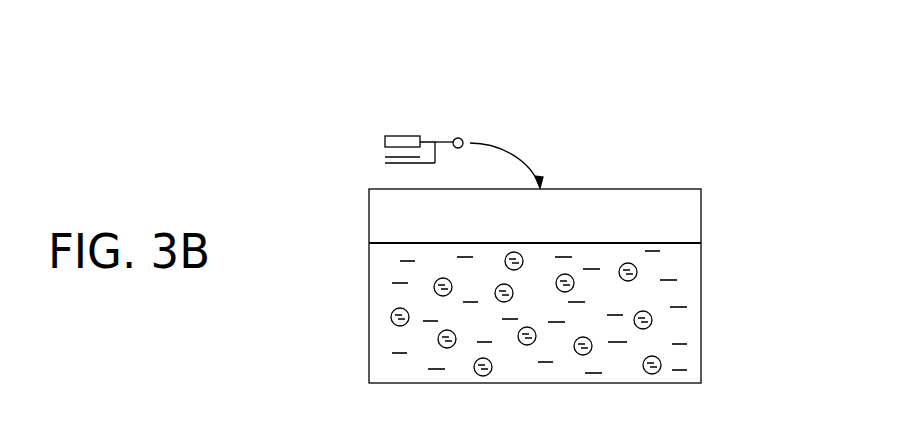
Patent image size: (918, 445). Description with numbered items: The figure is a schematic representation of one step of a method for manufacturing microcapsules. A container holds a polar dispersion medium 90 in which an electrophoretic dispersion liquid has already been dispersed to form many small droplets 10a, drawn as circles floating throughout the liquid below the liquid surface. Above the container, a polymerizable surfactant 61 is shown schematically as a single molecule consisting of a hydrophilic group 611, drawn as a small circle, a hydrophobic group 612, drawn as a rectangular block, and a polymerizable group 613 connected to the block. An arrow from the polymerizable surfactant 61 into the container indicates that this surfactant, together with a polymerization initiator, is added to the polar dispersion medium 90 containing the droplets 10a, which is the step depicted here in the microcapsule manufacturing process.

The polymerizable surfactant 61 is at (490, 80).
The hydrophilic group 611 is at (458, 138).
The hydrophobic group 612 is at (400, 136).
The polymerizable group 613 is at (385, 161).
The droplets 10a is at (637, 270).
The polar dispersion medium 90 is at (682, 351).